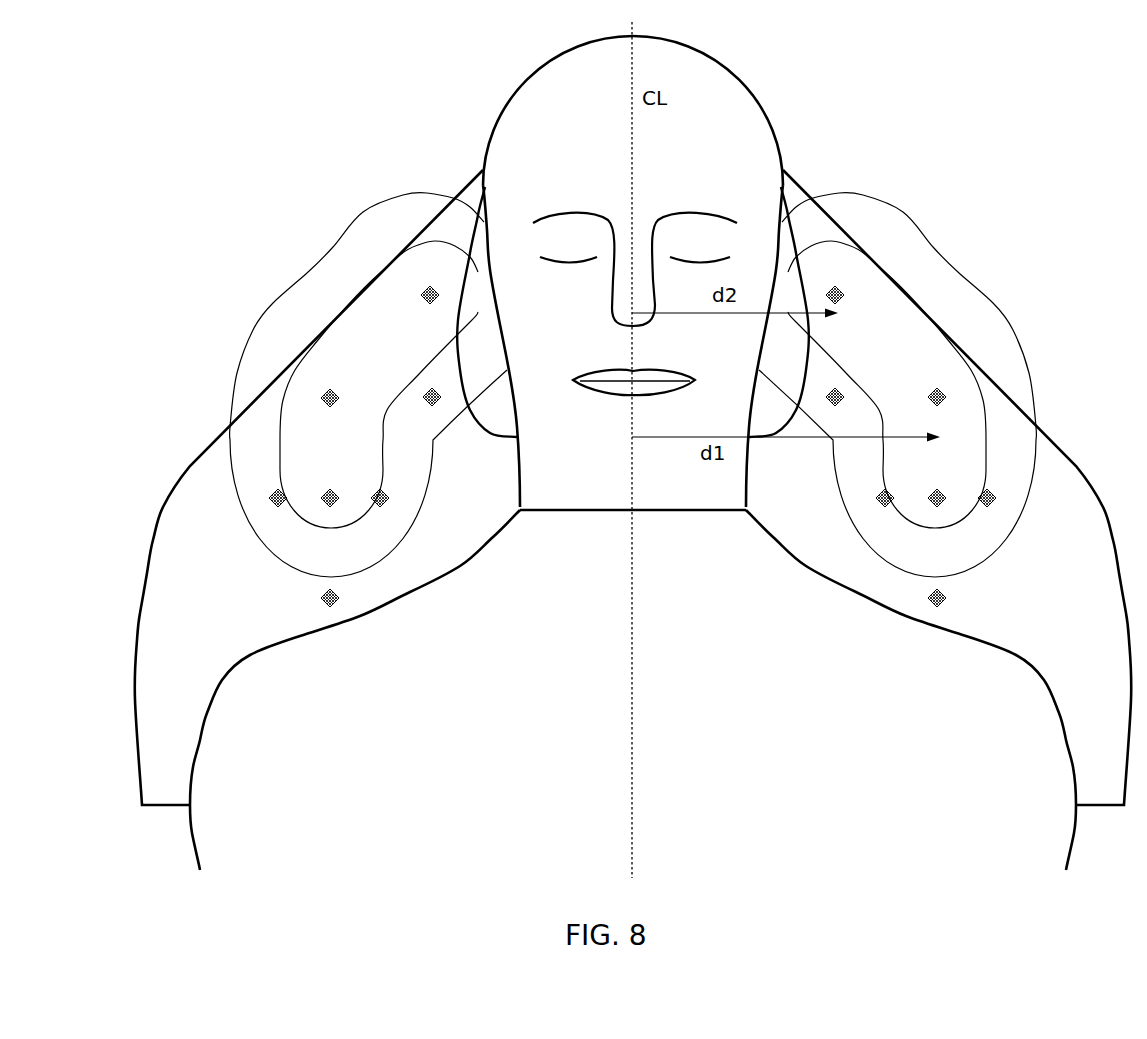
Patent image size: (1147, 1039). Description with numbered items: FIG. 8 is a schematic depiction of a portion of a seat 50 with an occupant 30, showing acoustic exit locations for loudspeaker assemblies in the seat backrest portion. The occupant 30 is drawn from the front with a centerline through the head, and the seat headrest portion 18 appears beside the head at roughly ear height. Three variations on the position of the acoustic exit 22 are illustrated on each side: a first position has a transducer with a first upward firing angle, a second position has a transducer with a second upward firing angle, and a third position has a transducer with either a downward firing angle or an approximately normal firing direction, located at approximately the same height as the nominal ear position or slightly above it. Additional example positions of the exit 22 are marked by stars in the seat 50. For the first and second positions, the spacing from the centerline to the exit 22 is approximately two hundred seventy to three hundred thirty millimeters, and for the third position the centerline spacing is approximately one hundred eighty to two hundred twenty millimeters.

The seat headrest portion 18 is at (506, 415).
The acoustic exit 22 is at (659, 406).
The occupant 30 is at (815, 128).
The seat 50 is at (170, 413).